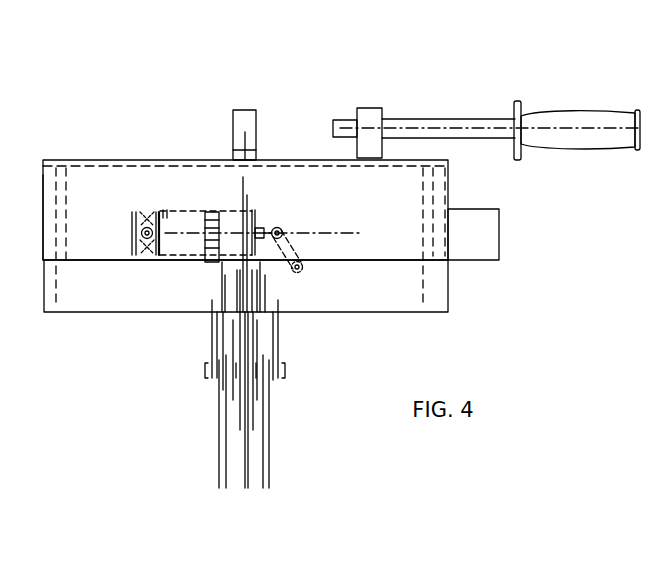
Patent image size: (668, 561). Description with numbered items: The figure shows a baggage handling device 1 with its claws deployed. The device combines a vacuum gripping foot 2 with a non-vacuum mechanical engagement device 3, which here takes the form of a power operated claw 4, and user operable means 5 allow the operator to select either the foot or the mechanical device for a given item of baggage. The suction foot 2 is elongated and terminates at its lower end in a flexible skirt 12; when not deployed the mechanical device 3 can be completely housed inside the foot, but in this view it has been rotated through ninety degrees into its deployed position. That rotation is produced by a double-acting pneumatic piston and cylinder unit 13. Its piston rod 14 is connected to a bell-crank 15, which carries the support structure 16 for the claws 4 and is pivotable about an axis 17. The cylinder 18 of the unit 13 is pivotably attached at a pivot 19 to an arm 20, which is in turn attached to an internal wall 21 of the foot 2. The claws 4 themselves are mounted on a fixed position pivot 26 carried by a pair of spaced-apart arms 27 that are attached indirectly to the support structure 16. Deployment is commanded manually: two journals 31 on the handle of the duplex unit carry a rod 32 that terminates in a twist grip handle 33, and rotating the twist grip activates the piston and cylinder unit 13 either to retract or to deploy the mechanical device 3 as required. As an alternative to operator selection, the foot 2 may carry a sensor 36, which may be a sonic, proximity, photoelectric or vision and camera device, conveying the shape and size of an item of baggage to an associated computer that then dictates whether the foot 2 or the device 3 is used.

The baggage handling device 1 is at (279, 92).
The vacuum gripping foot 2 is at (450, 199).
The mechanical engagement device 3 is at (314, 398).
The power operated claw 4 is at (233, 462).
The user operable means 5 is at (486, 86).
The flexible skirt 12 is at (453, 294).
The double-acting pneumatic piston and cylinder unit 13 is at (166, 257).
The piston rod 14 is at (267, 221).
The bell-crank 15 is at (304, 250).
The support structure 16 is at (263, 206).
The pivot axis 17 is at (308, 277).
The cylinder 18 is at (191, 257).
The pivotable attachment 19 is at (167, 181).
The arm 20 is at (123, 208).
The internal wall 21 is at (83, 192).
The fixed position pivot 26 is at (201, 372).
The spaced-apart arms 27 is at (208, 358).
The journals 31 is at (383, 102).
The rod 32 is at (477, 116).
The twist grip handle 33 is at (573, 108).
The sensor 36 is at (506, 235).